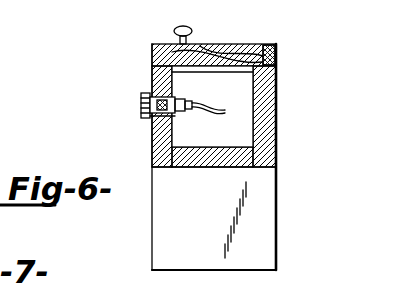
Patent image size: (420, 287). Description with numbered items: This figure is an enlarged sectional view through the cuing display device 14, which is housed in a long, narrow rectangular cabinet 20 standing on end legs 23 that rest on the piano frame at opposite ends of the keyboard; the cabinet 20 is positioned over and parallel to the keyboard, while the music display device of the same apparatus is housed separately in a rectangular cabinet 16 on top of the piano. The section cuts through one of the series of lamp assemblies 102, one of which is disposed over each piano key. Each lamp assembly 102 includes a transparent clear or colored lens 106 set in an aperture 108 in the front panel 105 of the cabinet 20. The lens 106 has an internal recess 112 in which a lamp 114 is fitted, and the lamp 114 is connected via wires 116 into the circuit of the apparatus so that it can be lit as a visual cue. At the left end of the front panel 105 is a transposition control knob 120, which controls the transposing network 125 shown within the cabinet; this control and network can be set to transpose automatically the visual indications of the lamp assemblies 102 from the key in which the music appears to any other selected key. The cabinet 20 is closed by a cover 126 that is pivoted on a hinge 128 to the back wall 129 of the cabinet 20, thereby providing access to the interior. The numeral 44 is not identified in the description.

The cuing display device 14 is at (316, 0).
The rectangular cabinet 16 is at (122, 7).
The control element 44 is at (86, 7).
The cabinet 20 is at (278, 118).
The end legs 23 is at (173, 225).
The lamp assembly 102 is at (146, 117).
The front panel 105 is at (160, 63).
The lens 106 is at (140, 98).
The aperture 108 is at (152, 132).
The internal recess 112 is at (143, 86).
The lamp 114 is at (153, 124).
The wires 116 is at (258, 96).
The transposition control knob 120 is at (133, 112).
The transposing network 125 is at (245, 118).
The cover 126 is at (231, 51).
The hinge 128 is at (275, 56).
The back wall 129 is at (276, 96).